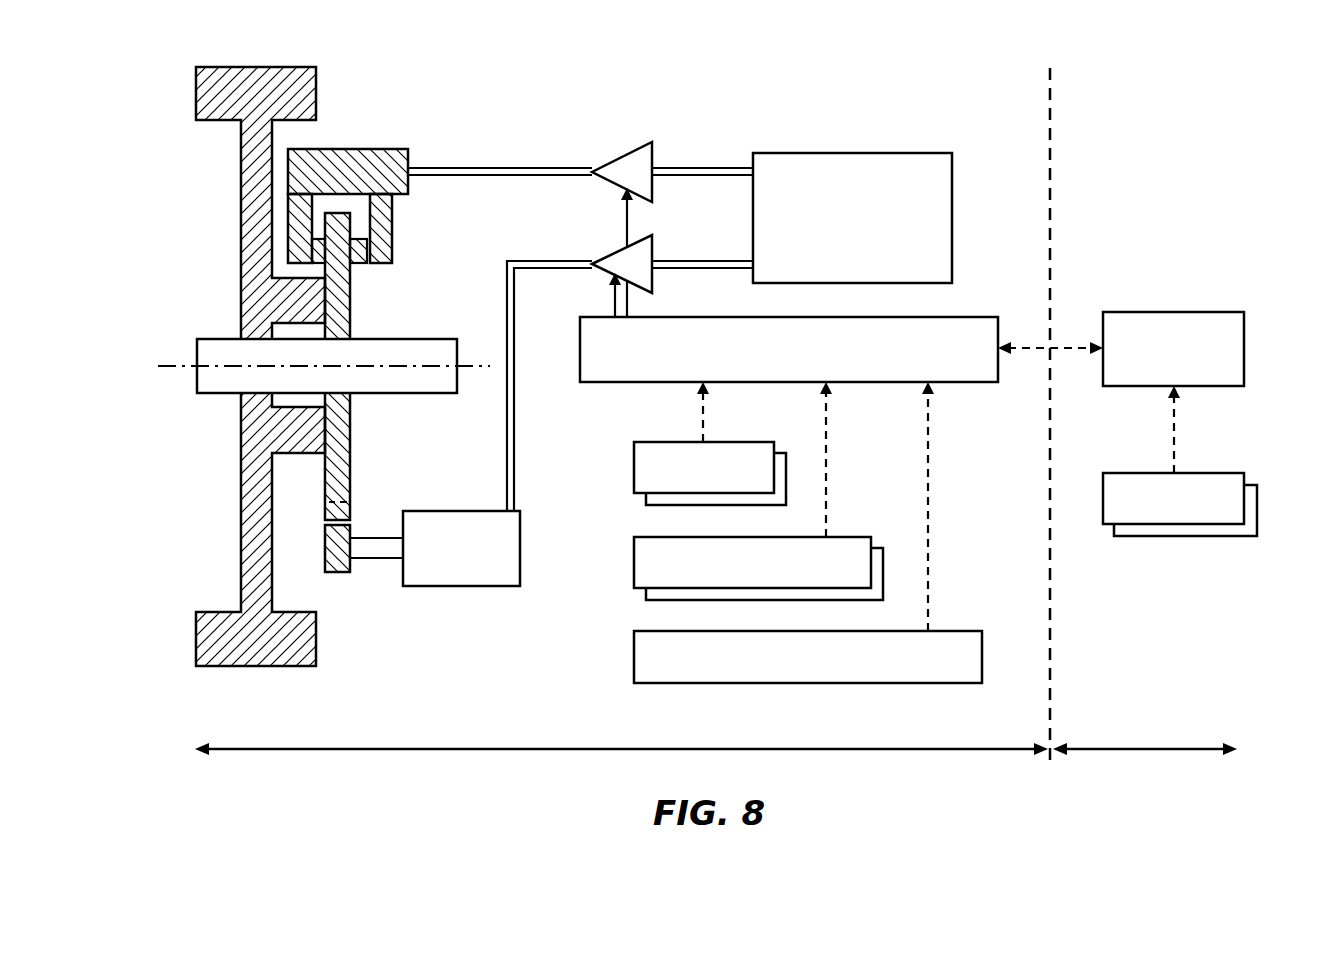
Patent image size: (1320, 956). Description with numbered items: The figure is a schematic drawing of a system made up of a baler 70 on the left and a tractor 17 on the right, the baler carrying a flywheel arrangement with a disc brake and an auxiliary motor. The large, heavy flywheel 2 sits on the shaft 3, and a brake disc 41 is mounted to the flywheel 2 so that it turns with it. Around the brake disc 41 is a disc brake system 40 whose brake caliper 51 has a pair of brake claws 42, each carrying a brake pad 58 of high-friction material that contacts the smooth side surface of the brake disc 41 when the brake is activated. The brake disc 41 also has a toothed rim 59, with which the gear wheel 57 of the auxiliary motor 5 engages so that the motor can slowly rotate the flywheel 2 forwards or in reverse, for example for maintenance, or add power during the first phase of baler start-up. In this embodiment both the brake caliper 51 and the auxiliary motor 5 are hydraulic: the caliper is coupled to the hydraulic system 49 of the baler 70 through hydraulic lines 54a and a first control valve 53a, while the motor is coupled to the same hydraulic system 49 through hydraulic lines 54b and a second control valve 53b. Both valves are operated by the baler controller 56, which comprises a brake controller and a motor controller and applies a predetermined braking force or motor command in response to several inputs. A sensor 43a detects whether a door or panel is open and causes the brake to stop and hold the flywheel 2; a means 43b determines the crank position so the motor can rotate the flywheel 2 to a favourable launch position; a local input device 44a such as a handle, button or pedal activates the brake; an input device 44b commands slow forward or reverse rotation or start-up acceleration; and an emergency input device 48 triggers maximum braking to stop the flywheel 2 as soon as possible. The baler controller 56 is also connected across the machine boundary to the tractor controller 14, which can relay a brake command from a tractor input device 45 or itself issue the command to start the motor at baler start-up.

The flywheel 2 is at (196, 92).
The shaft 3 is at (218, 339).
The auxiliary motor 5 is at (460, 586).
The tractor controller 14 is at (1200, 312).
The external region 17 is at (1127, 749).
The disc brake system 40 is at (424, 123).
The brake disc 41 is at (350, 465).
The brake claws 42 is at (392, 220).
The sensor 43a is at (634, 468).
The means for determining a position of the crank 43b is at (646, 497).
The local input device 44a is at (634, 563).
The input device 44b is at (646, 592).
The tractor input device 45 is at (1200, 473).
The emergency input device 48 is at (634, 655).
The hydraulic system 49 is at (865, 153).
The brake caliper 51 is at (354, 149).
The first control valve 53a is at (657, 155).
The second control valve 53b is at (657, 250).
The hydraulic lines 54a is at (503, 168).
The hydraulic lines 54b is at (553, 261).
The baler controller 56 is at (968, 317).
The gear wheel 57 is at (337, 572).
The brake pad 58 is at (312, 262).
The toothed rim 59 is at (345, 510).
The baler 70 is at (808, 749).